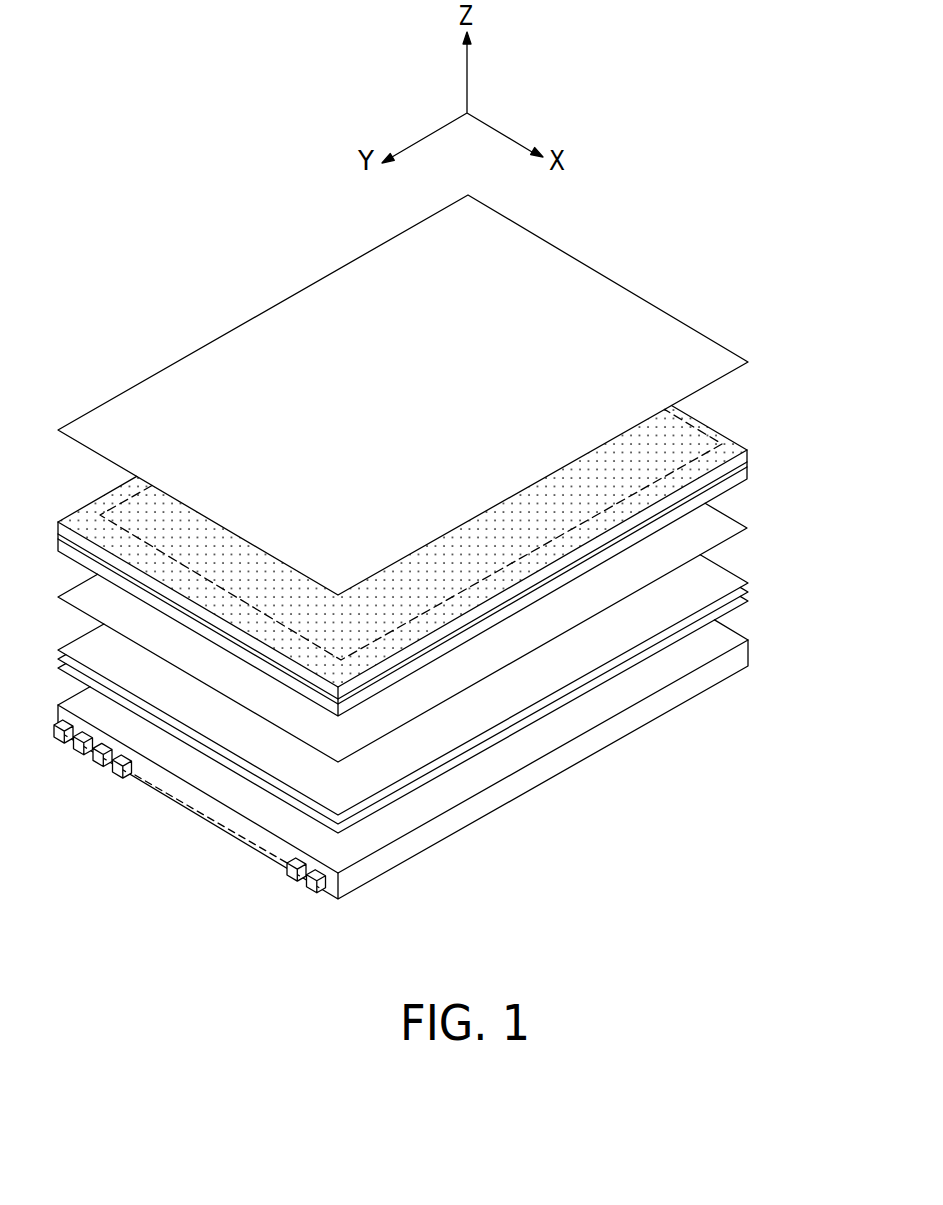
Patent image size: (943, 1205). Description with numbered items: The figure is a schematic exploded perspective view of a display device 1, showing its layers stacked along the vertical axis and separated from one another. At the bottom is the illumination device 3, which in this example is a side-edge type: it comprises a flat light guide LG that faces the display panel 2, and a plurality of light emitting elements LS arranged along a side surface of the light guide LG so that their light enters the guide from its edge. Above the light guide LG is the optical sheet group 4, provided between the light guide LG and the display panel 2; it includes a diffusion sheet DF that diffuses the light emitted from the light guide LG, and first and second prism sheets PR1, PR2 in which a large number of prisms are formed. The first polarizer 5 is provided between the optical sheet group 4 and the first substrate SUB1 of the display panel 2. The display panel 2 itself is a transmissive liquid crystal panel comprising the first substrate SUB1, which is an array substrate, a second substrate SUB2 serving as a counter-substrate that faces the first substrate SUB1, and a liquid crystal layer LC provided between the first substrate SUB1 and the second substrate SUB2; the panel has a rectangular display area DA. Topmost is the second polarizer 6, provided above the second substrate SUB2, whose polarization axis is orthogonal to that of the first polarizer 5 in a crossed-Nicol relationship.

The display device 1 is at (145, 348).
The display panel 2 is at (476, 544).
The illumination device 3 is at (401, 775).
The optical sheet group 4 is at (467, 688).
The first polarizer 5 is at (742, 519).
The second polarizer 6 is at (717, 343).
The display area DA is at (703, 417).
The first substrate SUB1 is at (742, 478).
The second substrate SUB2 is at (742, 444).
The liquid crystal layer LC is at (748, 464).
The first prism sheet PR1 is at (748, 588).
The second prism sheet PR2 is at (742, 578).
The diffusion sheet DF is at (742, 600).
The light guide LG is at (415, 847).
The light emitting elements LS is at (288, 877).